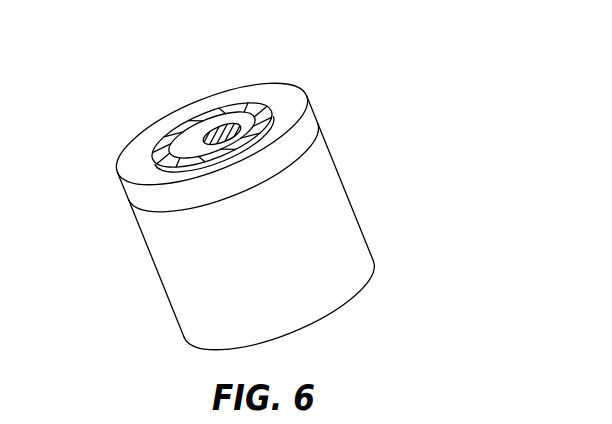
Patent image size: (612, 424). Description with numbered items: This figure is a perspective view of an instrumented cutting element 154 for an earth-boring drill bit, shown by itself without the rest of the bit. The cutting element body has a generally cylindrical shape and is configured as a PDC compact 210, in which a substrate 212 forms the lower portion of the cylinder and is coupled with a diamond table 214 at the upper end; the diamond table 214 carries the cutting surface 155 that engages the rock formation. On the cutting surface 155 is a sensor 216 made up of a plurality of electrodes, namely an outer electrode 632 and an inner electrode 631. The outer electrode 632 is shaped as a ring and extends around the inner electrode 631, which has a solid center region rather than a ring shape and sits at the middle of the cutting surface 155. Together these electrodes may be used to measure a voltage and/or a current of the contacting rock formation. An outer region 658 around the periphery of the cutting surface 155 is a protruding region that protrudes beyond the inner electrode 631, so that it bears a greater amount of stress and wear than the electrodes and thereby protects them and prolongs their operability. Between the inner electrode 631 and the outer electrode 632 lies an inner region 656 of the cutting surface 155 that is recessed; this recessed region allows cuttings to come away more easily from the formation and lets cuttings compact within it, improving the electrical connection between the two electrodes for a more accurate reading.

The instrumented cutting element 154 is at (455, 112).
The cutting surface 155 is at (288, 95).
The PDC compact 210 is at (177, 351).
The substrate 212 is at (333, 202).
The diamond table 214 is at (307, 125).
The sensor 216 is at (147, 148).
The inner electrode 631 is at (213, 130).
The outer electrode 632 is at (233, 108).
The inner region 656 is at (185, 148).
The outer region 658 is at (127, 167).